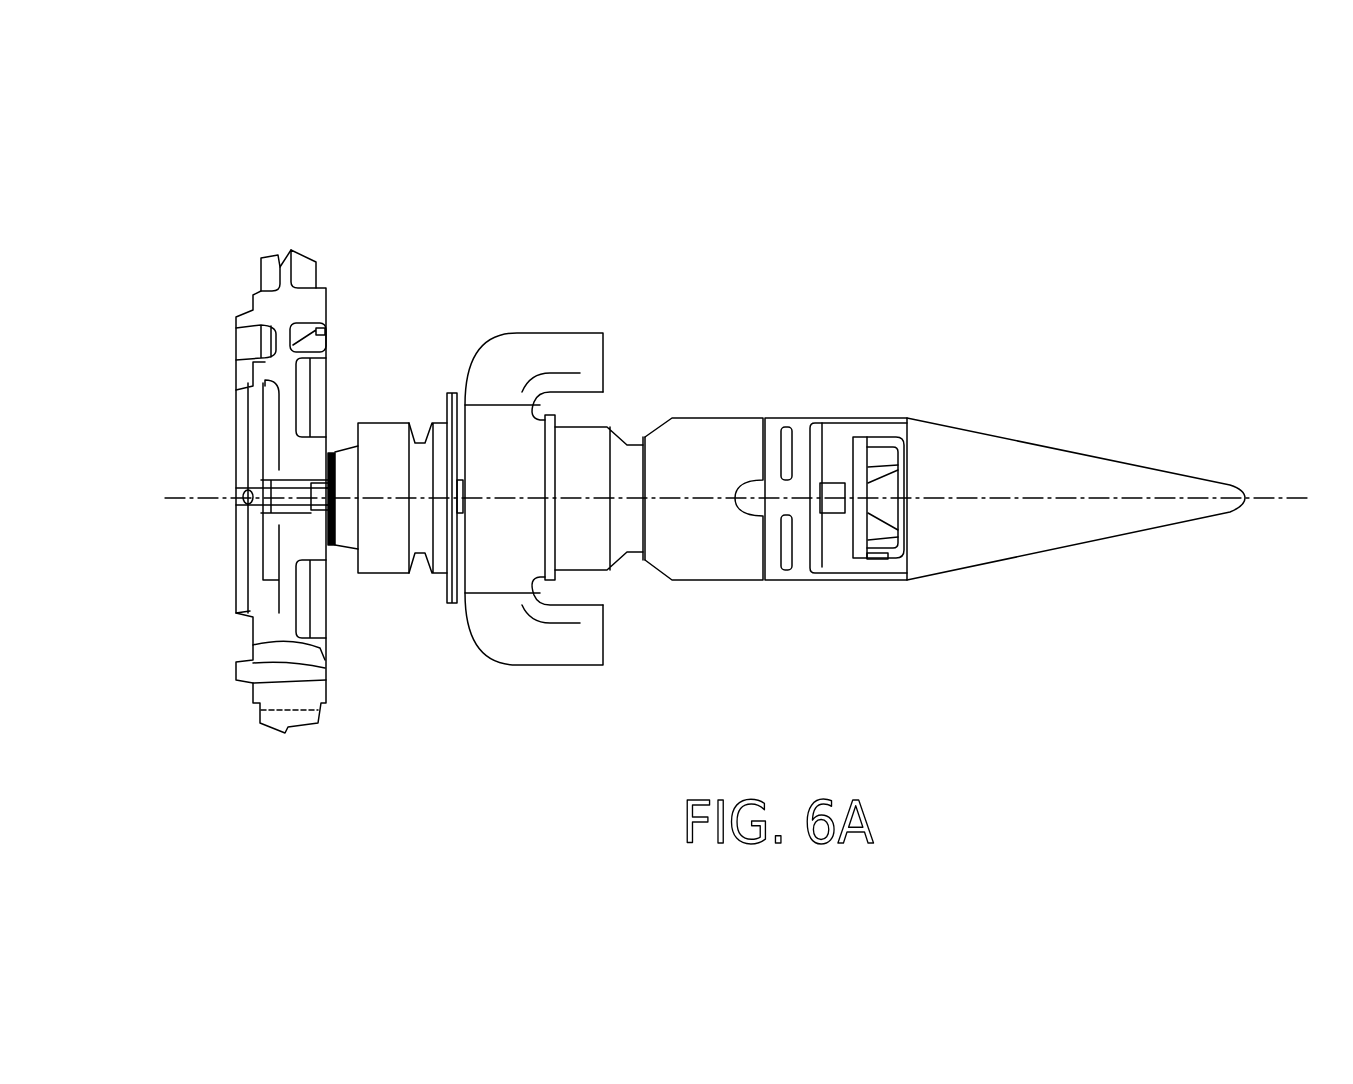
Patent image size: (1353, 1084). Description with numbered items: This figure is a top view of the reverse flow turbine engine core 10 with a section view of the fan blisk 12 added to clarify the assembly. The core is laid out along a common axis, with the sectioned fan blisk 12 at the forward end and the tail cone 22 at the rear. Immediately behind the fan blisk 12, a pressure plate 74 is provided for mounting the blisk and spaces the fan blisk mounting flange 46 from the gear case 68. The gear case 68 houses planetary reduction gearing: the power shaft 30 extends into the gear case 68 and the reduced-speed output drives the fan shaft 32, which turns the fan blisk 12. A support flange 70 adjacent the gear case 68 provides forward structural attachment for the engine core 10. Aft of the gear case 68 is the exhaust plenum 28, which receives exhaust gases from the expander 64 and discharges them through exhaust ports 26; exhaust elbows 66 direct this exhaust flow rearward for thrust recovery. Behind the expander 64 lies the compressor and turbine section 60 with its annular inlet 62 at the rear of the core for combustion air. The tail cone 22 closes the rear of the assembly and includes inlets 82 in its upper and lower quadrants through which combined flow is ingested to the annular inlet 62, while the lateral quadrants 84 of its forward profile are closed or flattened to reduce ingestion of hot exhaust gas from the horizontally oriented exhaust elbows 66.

The reverse flow turbine engine core 10 is at (727, 630).
The fan blisk 12 is at (263, 256).
The tail cone 22 is at (1053, 533).
The exhaust ports 26 is at (517, 592).
The exhaust plenum 28 is at (510, 447).
The power shaft 30 is at (461, 478).
The fan shaft 32 is at (298, 478).
The fan blisk mounting flange 46 is at (278, 547).
The compressor and turbine section 60 is at (697, 442).
The annular inlet 62 is at (868, 467).
The expander 64 is at (582, 560).
The exhaust elbows 66 is at (568, 342).
The gear case 68 is at (398, 538).
The support flange 70 is at (450, 603).
The pressure plate 74 is at (333, 460).
The inlets 82 is at (880, 530).
The lateral quadrants 84 is at (877, 418).